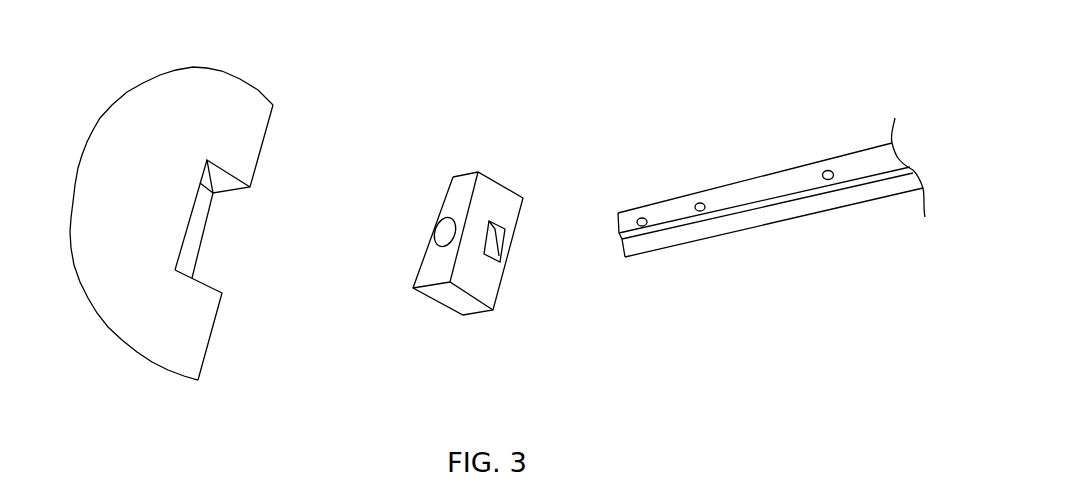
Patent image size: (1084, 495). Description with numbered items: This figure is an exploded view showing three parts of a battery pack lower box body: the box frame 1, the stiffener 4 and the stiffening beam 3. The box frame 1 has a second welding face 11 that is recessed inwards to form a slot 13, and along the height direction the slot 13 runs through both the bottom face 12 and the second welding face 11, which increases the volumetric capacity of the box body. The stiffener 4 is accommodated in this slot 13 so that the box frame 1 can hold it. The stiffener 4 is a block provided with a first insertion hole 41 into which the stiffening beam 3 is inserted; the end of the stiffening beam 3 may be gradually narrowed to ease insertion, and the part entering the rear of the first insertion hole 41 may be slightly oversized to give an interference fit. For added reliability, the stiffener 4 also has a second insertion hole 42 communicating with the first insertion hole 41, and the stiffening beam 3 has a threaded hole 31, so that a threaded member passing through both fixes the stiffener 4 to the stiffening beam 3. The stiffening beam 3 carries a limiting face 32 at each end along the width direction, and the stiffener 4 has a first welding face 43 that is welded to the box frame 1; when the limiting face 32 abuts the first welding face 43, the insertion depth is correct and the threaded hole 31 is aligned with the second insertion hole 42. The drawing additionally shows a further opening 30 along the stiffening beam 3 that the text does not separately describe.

The box frame 1 is at (205, 203).
The second welding face 11 is at (213, 93).
The bottom face 12 is at (263, 147).
The slot 13 is at (208, 268).
The stiffener 4 is at (442, 228).
The first insertion hole 41 is at (503, 255).
The second insertion hole 42 is at (440, 242).
The first welding face 43 is at (477, 290).
The stiffening beam 3 is at (760, 216).
The hole 30 is at (700, 205).
The threaded hole 31 is at (642, 217).
The limiting face 32 is at (680, 245).